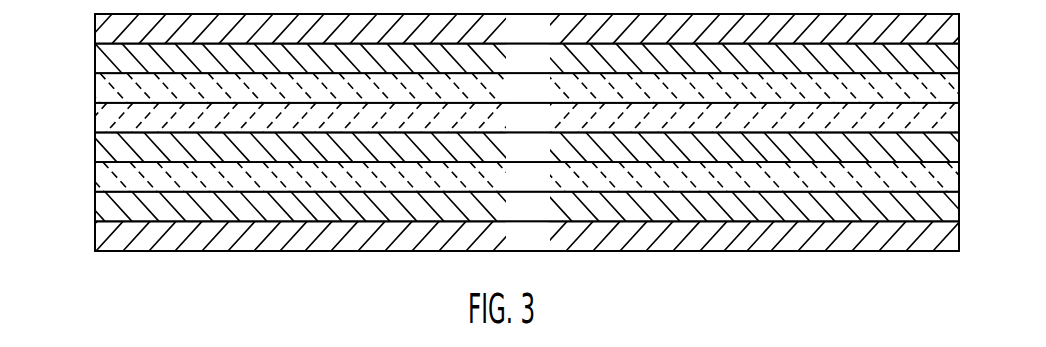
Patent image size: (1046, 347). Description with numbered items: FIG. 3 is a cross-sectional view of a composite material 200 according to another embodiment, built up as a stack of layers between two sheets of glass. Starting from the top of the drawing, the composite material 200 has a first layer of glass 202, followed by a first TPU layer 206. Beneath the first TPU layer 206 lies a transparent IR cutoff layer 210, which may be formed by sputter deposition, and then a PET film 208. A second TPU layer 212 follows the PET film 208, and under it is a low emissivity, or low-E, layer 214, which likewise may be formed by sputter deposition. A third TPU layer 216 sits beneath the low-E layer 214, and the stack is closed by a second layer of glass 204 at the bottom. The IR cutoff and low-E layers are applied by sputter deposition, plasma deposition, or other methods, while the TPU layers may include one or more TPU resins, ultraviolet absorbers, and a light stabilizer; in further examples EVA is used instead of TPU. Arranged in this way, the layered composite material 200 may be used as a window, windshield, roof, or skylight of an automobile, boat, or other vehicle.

The composite material 200 is at (82, 92).
The first layer of glass 202 is at (544, 40).
The second layer of glass 204 is at (544, 247).
The first TPU layer 206 is at (544, 69).
The PET film 208 is at (544, 128).
The transparent IR cutoff layer 210 is at (544, 99).
The second TPU layer 212 is at (544, 158).
The low emissivity layer 214 is at (544, 188).
The third TPU layer 216 is at (544, 217).